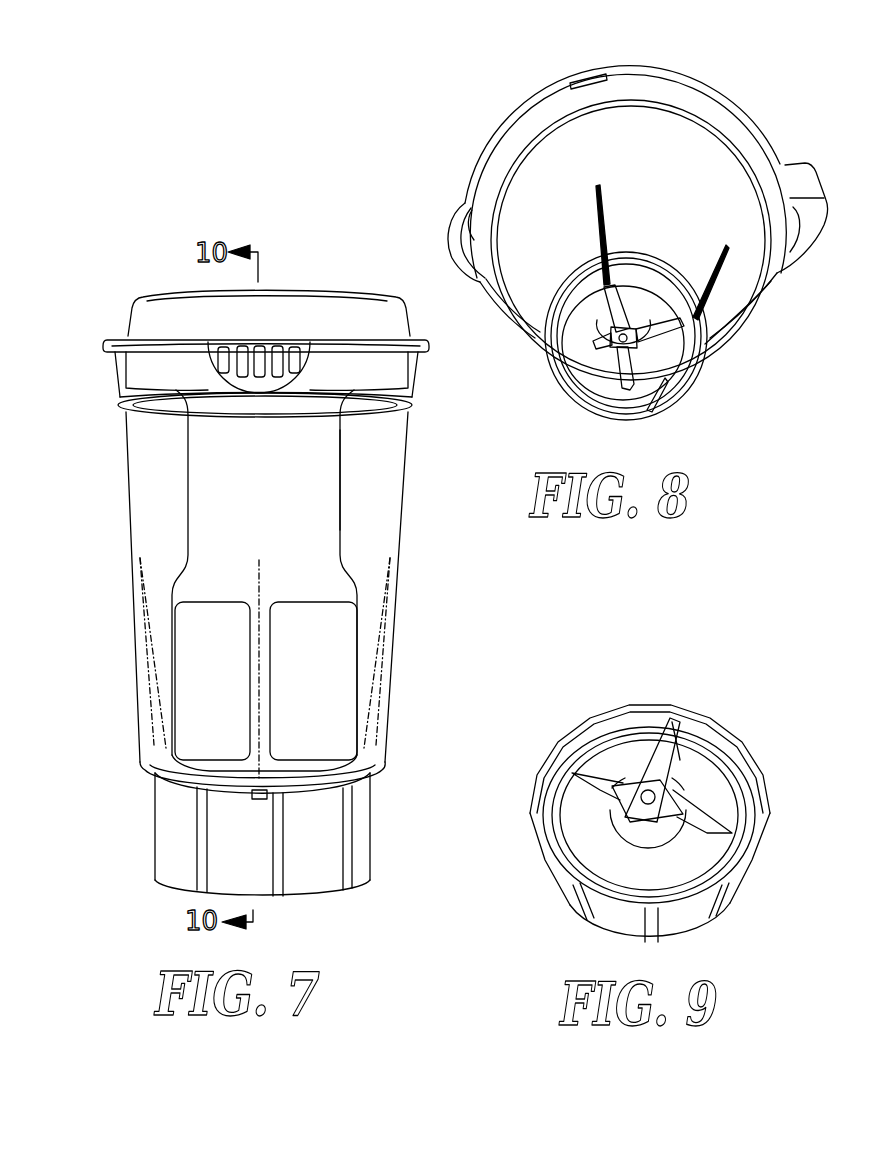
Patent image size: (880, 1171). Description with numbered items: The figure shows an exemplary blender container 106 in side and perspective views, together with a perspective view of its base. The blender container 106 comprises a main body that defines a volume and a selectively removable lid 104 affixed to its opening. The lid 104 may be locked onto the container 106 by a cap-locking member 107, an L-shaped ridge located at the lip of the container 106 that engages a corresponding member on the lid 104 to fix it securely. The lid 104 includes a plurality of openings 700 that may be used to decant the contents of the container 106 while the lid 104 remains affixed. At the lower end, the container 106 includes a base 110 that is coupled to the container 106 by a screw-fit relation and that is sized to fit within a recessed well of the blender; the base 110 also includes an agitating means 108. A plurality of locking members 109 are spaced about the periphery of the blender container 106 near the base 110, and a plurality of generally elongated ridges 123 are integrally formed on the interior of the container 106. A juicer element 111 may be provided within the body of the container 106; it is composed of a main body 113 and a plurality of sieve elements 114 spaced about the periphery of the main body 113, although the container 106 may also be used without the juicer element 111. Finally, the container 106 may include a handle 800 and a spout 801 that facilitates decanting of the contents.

In FIG. 7, the lid 104 is at (380, 317).
In FIG. 7, the blender container 106 is at (147, 497).
In FIG. 8, the blender container 106 is at (693, 102).
In FIG. 8, the cap-locking member 107 is at (577, 80).
In FIG. 8, the agitating means 108 is at (612, 328).
In FIG. 9, the agitating means 108 is at (657, 762).
In FIG. 7, the locking member 109 is at (258, 801).
In FIG. 7, the base 110 is at (360, 840).
In FIG. 9, the base 110 is at (717, 740).
In FIG. 7, the juicer element 111 is at (350, 448).
In FIG. 7, the main body 113 is at (327, 514).
In FIG. 7, the sieve element 114 is at (223, 687).
In FIG. 7, the elongated ridge 123 is at (155, 731).
In FIG. 7, the opening 700 is at (278, 358).
In FIG. 8, the handle 800 is at (795, 173).
In FIG. 8, the spout 801 is at (465, 215).